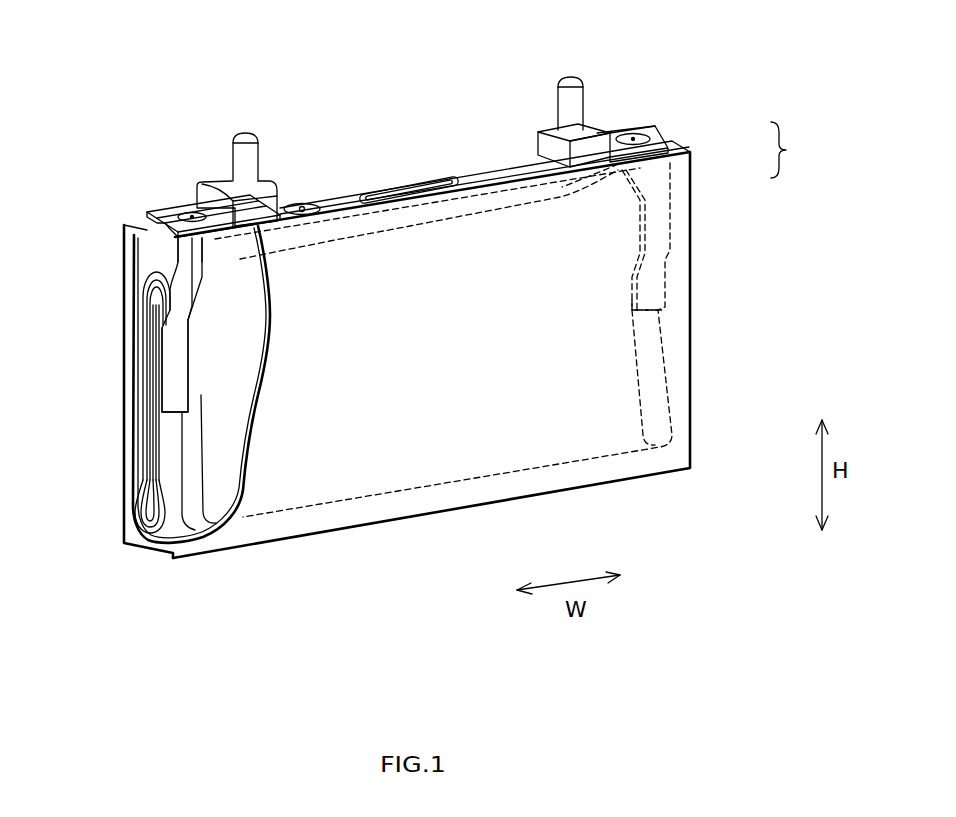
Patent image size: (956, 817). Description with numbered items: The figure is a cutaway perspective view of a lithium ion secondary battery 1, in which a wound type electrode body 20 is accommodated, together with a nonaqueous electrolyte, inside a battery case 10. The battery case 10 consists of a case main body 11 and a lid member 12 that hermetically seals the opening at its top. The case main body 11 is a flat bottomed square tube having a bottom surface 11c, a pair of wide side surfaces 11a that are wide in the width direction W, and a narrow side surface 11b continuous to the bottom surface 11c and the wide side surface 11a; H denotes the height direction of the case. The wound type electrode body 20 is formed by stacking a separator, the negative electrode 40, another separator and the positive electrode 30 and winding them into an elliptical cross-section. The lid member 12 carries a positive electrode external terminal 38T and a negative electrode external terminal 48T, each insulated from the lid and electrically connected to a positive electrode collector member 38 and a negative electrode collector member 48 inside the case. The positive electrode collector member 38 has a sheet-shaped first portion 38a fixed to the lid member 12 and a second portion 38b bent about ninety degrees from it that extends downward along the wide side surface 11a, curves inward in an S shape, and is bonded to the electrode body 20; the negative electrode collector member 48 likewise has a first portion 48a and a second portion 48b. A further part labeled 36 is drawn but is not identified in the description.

The secondary battery 1 is at (136, 84).
The battery case 10 is at (793, 150).
The case main body 11 is at (417, 381).
The wide side surface 11a is at (583, 433).
The narrow side surface 11b is at (132, 533).
The bottom surface 11c is at (362, 512).
The lid member 12 is at (684, 146).
The wound type electrode body 20 is at (610, 363).
The positive electrode 30 is at (173, 457).
The bent portion of electrode 36 is at (195, 487).
The positive electrode collector member 38 is at (122, 315).
The first portion 38a is at (165, 243).
The second portion 38b is at (178, 368).
The positive electrode external terminal 38T is at (245, 132).
The negative electrode 40 is at (652, 407).
The negative electrode collector member 48 is at (608, 220).
The first portion 48a is at (550, 175).
The second portion 48b is at (653, 290).
The negative electrode external terminal 48T is at (570, 76).